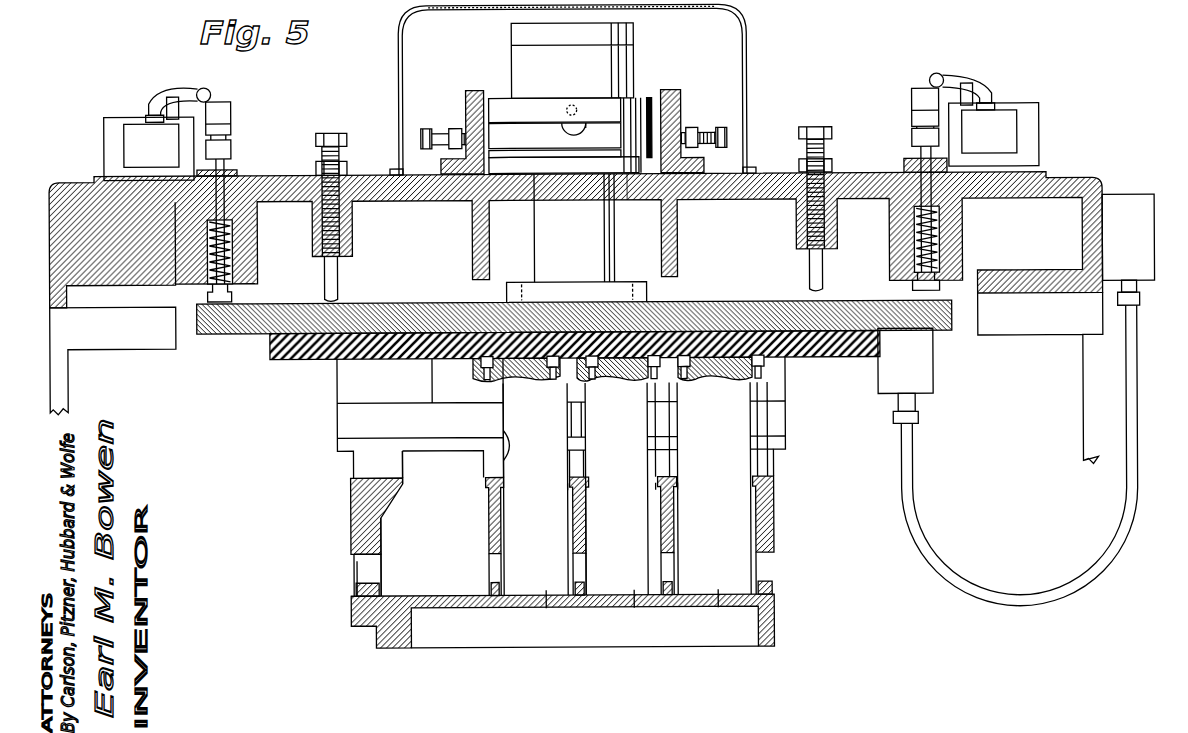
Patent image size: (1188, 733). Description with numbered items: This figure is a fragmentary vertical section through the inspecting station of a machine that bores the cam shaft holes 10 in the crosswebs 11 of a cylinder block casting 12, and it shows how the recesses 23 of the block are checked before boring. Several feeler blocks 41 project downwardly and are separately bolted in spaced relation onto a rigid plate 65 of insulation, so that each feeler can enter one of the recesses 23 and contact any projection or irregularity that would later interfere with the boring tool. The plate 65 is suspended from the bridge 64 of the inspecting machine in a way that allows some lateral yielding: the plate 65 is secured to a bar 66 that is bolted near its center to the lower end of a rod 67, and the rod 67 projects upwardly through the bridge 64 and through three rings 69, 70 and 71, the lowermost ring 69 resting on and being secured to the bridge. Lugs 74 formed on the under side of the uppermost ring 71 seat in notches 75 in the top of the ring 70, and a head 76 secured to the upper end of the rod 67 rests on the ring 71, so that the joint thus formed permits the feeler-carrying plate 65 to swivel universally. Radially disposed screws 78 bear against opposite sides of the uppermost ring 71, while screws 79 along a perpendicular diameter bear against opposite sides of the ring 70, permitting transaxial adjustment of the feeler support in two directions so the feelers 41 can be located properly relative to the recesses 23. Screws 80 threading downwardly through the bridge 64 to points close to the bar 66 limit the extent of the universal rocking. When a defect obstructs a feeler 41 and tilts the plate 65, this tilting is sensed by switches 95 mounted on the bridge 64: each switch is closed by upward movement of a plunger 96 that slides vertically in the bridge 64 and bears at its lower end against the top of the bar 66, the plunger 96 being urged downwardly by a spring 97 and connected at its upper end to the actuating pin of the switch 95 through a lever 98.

The cam shaft hole 10 is at (378, 590).
The crossweb 11 is at (488, 513).
The cylinder block casting 12 is at (378, 640).
The recess 23 is at (687, 475).
The feeler block 41 is at (565, 507).
The bridge 64 is at (1101, 182).
The plate 65 is at (315, 358).
The bar 66 is at (740, 303).
The rod 67 is at (608, 240).
The ring 69 is at (628, 178).
The ring 70 is at (680, 122).
The ring 71 is at (652, 100).
The lug 74 is at (565, 128).
The notch 75 is at (590, 130).
The head 76 is at (520, 32).
The screw 78 is at (575, 105).
The screw 79 is at (432, 128).
The screw 80 is at (340, 286).
The switch 95 is at (134, 125).
The plunger 96 is at (229, 168).
The spring 97 is at (238, 248).
The lever 98 is at (190, 88).